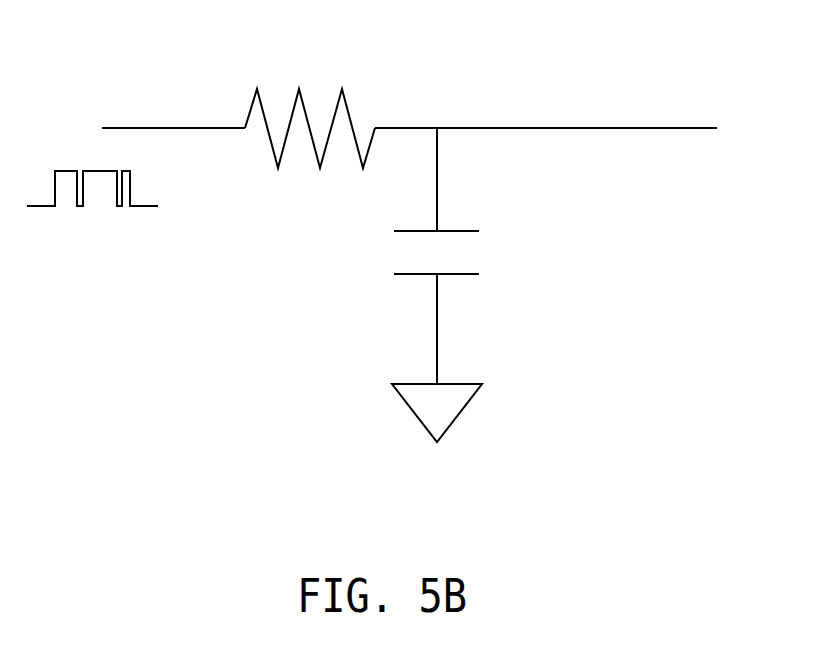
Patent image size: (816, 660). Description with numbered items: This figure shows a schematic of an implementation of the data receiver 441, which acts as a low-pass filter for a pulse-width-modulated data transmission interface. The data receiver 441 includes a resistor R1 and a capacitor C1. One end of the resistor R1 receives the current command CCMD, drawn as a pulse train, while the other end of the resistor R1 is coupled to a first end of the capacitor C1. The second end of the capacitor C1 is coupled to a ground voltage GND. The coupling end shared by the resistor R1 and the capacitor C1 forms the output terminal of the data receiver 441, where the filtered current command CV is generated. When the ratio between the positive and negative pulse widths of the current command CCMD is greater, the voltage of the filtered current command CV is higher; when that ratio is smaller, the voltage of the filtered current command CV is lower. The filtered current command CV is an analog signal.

The data receiver 441 is at (372, 264).
The resistor R1 is at (310, 104).
The capacitor C1 is at (458, 256).
The current command CCMD is at (136, 146).
The filtered current command CV is at (546, 109).
The ground voltage GND is at (437, 435).